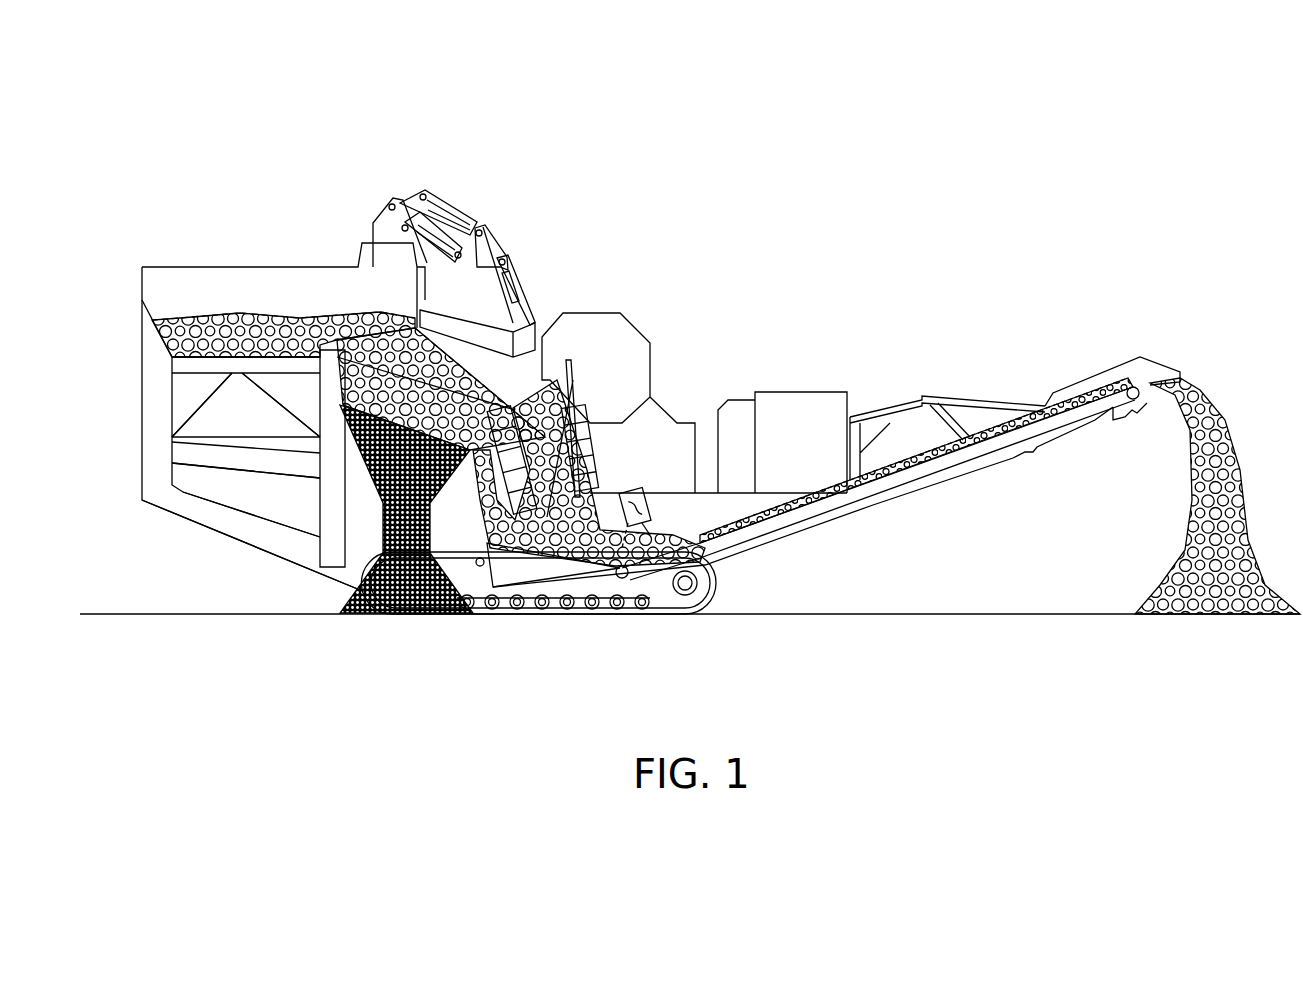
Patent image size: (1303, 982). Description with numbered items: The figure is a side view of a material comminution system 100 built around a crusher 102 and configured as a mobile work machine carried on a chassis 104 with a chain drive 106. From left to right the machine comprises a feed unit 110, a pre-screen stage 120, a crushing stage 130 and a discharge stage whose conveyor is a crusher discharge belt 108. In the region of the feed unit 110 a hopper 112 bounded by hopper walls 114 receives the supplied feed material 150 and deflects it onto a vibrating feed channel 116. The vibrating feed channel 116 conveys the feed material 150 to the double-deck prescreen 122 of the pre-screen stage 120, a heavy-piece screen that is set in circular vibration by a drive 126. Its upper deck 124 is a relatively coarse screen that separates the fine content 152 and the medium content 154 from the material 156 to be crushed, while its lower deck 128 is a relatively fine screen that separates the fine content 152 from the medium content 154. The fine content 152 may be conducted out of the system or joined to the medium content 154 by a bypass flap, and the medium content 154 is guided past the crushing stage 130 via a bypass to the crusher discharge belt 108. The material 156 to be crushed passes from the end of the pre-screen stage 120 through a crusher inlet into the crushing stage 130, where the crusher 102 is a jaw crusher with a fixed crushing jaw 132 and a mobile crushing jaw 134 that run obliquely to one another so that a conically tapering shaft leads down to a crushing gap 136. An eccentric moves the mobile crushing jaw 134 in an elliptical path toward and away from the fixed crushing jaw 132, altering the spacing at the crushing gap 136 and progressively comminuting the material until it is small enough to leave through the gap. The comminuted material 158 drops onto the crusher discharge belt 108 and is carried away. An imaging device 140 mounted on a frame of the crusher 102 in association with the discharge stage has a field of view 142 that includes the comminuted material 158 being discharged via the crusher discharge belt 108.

The material comminution system 100 is at (1069, 45).
The crusher 102 is at (866, 244).
The chassis 104 is at (318, 545).
The chain drive 106 is at (585, 617).
The crusher discharge belt 108 is at (915, 487).
The feed unit 110 is at (153, 165).
The hopper 112 is at (142, 280).
The hopper walls 114 is at (177, 308).
The vibrating feed channel 116 is at (205, 358).
The pre-screen stage 120 is at (413, 298).
The double-deck prescreen 122 is at (347, 377).
The upper deck 124 is at (375, 333).
The drive 126 is at (430, 381).
The lower deck 128 is at (320, 471).
The crushing stage 130 is at (554, 313).
The fixed crushing jaw 132 is at (520, 490).
The mobile crushing jaw 134 is at (537, 515).
The crushing gap 136 is at (533, 510).
The imaging device 140 is at (633, 500).
The field of view 142 is at (647, 535).
The feed material 150 is at (245, 322).
The fine content 152 is at (362, 617).
The medium content 154 is at (487, 473).
The material to be crushed 156 is at (570, 400).
The comminuted material 158 is at (1170, 580).